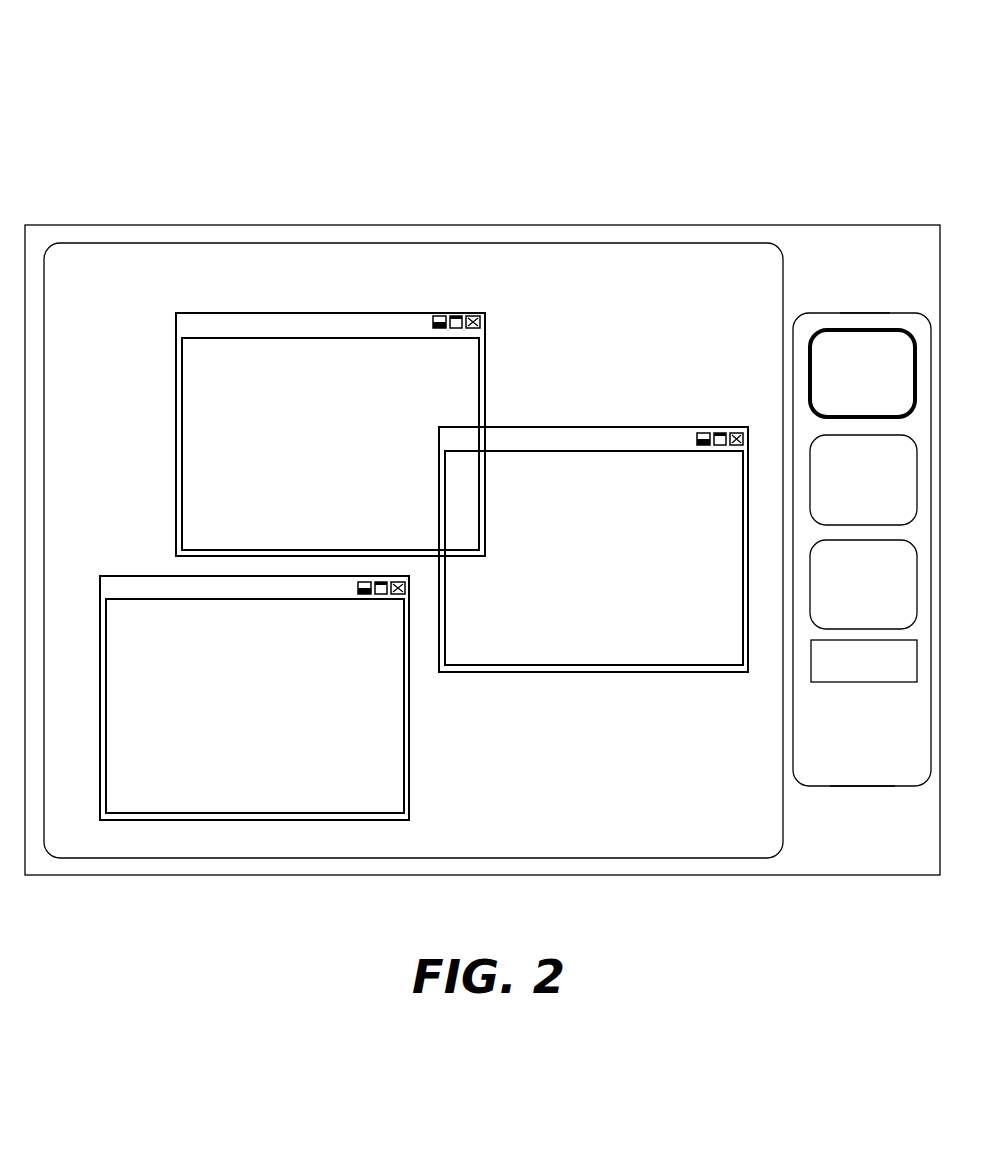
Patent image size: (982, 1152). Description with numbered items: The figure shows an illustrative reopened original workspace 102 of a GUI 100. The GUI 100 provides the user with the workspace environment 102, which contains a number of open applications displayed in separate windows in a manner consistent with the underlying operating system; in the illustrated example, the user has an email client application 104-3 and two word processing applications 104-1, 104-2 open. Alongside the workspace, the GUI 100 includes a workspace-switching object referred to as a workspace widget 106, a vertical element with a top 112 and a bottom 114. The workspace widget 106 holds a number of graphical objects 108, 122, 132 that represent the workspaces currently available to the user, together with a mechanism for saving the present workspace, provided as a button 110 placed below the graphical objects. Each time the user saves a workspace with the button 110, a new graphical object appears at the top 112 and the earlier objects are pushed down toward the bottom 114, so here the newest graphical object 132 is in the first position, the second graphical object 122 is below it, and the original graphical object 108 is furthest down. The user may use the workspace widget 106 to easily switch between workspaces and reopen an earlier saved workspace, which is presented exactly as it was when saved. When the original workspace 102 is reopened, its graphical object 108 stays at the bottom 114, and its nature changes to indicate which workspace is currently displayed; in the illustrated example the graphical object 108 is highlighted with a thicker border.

The GUI 100 is at (158, 102).
The workspace 102 is at (641, 243).
The word processing application 104-1 is at (300, 444).
The word processing application 104-2 is at (225, 707).
The email client application 104-3 is at (563, 559).
The workspace widget 106 is at (793, 348).
The graphical object 108 is at (882, 387).
The button 110 is at (882, 672).
The top 112 is at (863, 313).
The bottom 114 is at (864, 786).
The new graphical object 122 is at (882, 599).
The new graphical object 132 is at (882, 494).